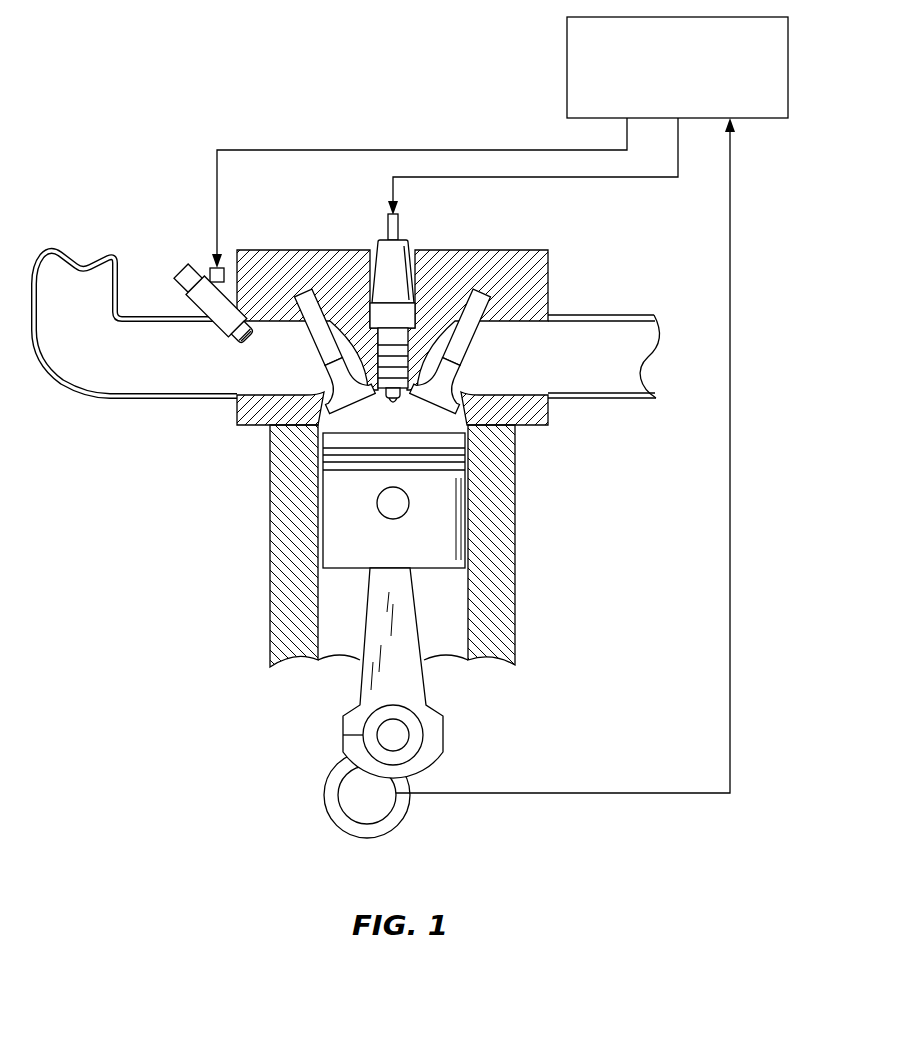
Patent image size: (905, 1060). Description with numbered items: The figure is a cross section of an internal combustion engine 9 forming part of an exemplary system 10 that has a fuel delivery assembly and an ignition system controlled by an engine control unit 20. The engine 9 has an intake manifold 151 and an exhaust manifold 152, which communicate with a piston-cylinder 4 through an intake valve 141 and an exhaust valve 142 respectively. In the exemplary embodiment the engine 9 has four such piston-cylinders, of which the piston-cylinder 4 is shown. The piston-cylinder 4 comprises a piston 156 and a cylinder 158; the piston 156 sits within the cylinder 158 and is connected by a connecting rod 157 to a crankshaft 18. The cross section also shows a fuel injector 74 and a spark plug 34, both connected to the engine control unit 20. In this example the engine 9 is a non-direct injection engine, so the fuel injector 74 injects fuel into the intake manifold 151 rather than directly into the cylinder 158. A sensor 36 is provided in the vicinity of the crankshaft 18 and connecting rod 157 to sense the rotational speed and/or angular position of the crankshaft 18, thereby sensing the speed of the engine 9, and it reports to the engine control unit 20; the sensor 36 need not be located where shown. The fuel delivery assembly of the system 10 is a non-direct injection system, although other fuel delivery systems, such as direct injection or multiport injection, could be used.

The system 10 is at (294, 106).
The engine control unit 20 is at (567, 62).
The fuel injector 74 is at (182, 262).
The spark plug 34 is at (411, 252).
The exhaust manifold 152 is at (600, 315).
The intake manifold 151 is at (55, 374).
The exhaust valve 142 is at (455, 385).
The intake valve 141 is at (353, 414).
The piston-cylinder 4 is at (445, 424).
The engine 9 is at (250, 516).
The piston 156 is at (346, 568).
The cylinder 158 is at (468, 620).
The connecting rod 157 is at (427, 682).
The crankshaft 18 is at (331, 773).
The sensor 36 is at (350, 822).